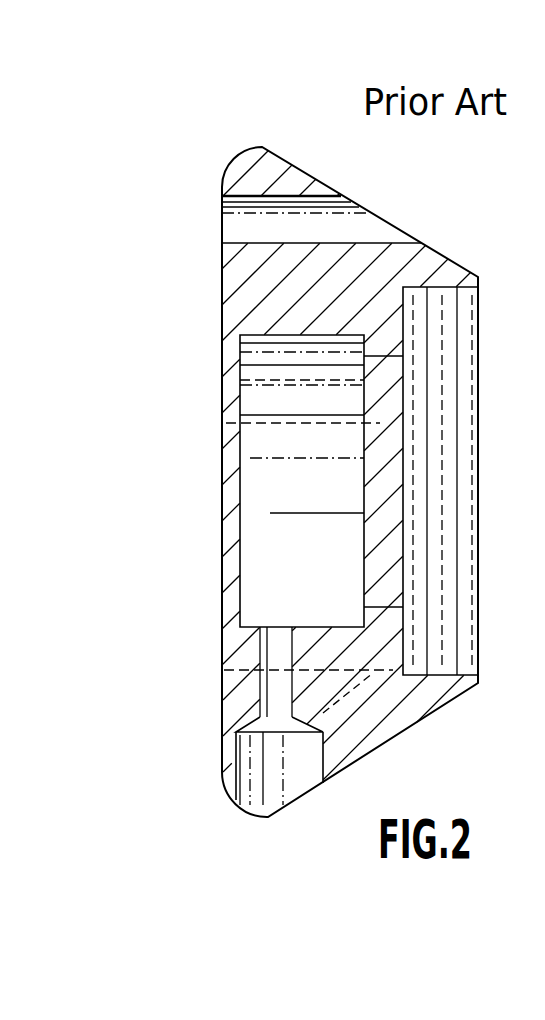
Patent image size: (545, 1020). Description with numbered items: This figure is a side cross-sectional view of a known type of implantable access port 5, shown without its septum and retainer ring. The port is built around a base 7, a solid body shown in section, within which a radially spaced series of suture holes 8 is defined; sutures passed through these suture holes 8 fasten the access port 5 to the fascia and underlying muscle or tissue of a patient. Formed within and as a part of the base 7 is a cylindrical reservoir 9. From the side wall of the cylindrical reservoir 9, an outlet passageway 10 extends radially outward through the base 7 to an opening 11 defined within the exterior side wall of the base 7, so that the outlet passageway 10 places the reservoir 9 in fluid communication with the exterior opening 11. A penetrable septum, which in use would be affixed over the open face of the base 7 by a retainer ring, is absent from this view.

The implantable access port 5 is at (168, 181).
The base 7 is at (222, 292).
The suture holes 8 is at (306, 231).
The cylindrical reservoir 9 is at (312, 500).
The outlet passageway 10 is at (286, 637).
The opening 11 is at (291, 778).